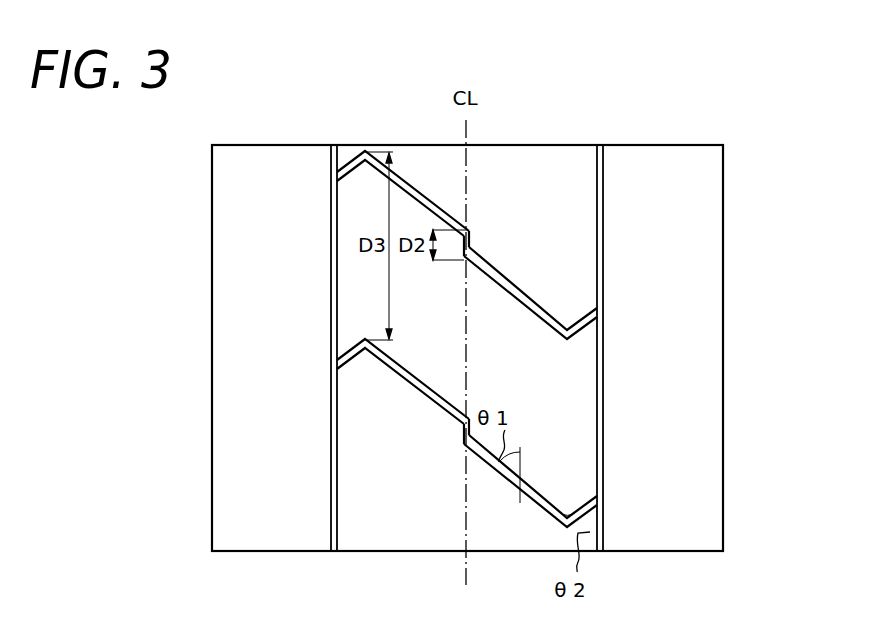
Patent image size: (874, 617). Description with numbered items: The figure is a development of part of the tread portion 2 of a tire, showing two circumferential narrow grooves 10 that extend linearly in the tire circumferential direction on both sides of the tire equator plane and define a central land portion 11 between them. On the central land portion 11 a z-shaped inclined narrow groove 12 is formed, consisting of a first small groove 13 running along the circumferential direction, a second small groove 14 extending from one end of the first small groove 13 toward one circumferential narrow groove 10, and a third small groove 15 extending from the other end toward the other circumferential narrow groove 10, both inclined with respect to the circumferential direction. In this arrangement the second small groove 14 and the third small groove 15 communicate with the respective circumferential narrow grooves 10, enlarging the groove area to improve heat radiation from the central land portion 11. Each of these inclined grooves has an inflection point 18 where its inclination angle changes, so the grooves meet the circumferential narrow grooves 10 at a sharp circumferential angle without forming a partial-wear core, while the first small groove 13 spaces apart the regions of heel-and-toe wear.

The tread portion 2 is at (286, 190).
The circumferential narrow groove 10 is at (331, 290).
The central land portion 11 is at (557, 187).
The inclined narrow groove 12 is at (559, 271).
The first small groove 13 is at (478, 240).
The second small groove 14 is at (408, 185).
The third small groove 15 is at (508, 282).
The inflection point 18 is at (567, 340).